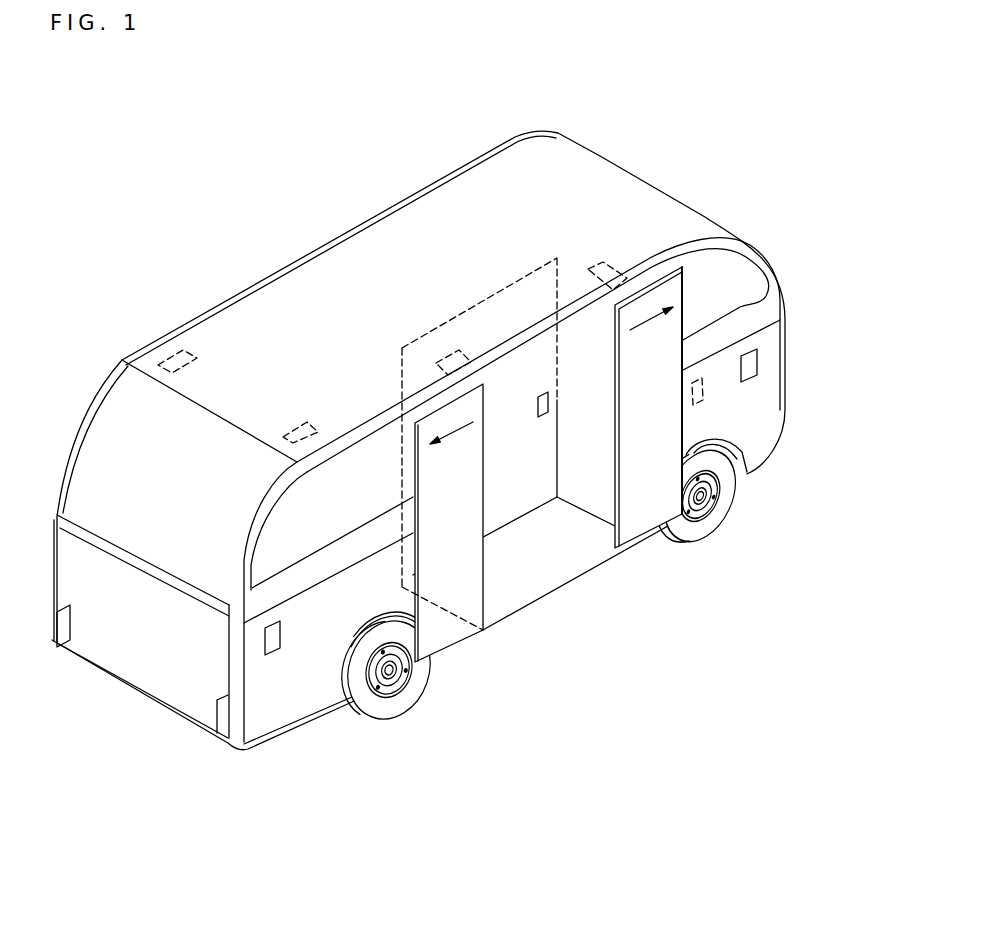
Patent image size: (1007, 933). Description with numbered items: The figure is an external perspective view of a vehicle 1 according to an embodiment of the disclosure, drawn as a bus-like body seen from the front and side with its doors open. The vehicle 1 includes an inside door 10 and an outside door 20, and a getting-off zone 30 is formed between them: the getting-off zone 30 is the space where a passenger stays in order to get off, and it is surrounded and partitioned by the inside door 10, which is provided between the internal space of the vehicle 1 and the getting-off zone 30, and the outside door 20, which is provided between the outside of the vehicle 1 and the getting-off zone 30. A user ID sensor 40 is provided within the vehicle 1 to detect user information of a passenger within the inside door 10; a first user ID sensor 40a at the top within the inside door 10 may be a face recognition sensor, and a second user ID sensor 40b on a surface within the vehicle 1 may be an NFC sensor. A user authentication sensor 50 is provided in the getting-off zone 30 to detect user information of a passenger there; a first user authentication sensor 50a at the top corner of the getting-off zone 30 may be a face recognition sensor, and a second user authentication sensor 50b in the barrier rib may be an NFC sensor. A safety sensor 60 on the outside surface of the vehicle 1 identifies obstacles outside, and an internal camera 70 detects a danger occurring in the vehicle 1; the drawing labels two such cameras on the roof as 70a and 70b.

The vehicle 1 is at (171, 73).
The inside door 10 is at (600, 482).
The outside door 20 is at (668, 430).
The getting-off zone 30 is at (521, 478).
The user ID sensor 40 is at (767, 157).
The first user ID sensor 40a is at (612, 266).
The second user ID sensor 40b is at (698, 380).
The user authentication sensor 50 is at (372, 127).
The first user authentication sensor 50a is at (447, 357).
The second user authentication sensor 50b is at (543, 395).
The safety sensor 60 is at (751, 367).
The internal camera 70 is at (160, 246).
The front first sensor 70a is at (170, 358).
The front second sensor 70b is at (293, 425).